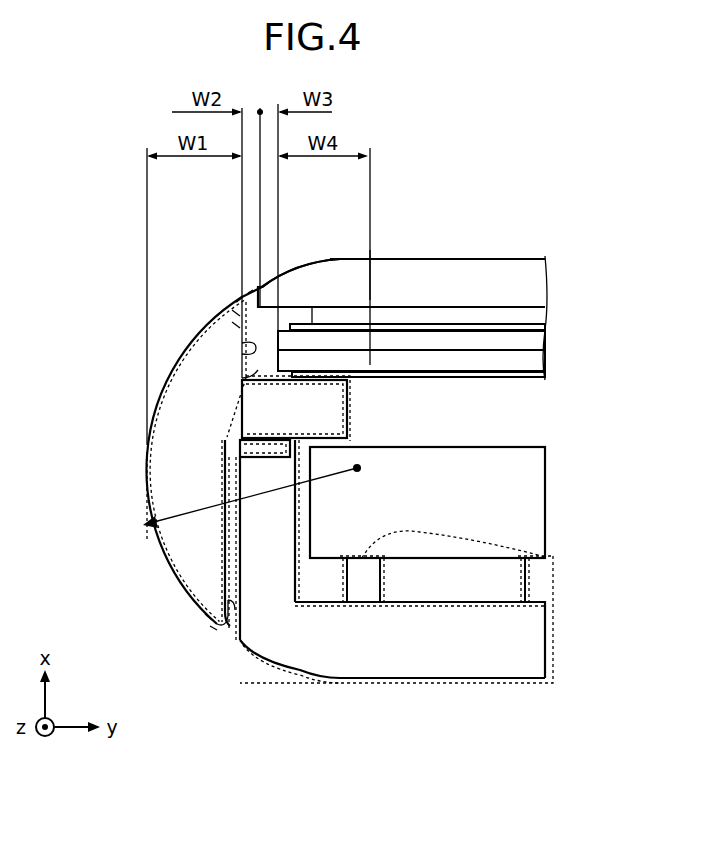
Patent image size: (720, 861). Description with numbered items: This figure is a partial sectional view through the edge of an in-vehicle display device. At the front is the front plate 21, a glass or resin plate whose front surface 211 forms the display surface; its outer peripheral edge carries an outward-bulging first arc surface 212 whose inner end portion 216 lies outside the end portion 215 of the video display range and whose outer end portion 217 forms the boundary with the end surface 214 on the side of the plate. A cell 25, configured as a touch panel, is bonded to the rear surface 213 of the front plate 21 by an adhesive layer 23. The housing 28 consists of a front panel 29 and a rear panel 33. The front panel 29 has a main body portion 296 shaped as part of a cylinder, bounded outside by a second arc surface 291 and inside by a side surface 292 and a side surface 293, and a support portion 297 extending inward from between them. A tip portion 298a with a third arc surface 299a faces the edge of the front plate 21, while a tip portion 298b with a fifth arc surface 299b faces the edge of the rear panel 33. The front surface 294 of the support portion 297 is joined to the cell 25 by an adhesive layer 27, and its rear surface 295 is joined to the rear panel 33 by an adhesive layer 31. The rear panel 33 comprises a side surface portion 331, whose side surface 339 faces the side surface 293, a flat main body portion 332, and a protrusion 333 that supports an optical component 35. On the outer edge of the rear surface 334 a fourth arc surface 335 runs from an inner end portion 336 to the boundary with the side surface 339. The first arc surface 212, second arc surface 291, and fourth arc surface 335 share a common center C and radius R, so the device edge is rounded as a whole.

The front plate 21 is at (520, 285).
The front surface 211 is at (493, 257).
The first arc surface 212 is at (312, 264).
The rear surface 213 is at (248, 343).
The end surface 214 is at (235, 303).
The end portion 215 is at (373, 259).
The inner end portion 216 is at (350, 258).
The outer end portion 217 is at (242, 297).
The adhesive layer 23 is at (520, 318).
The cell 25 is at (520, 358).
The adhesive layer 27 is at (348, 382).
The housing 28 is at (196, 642).
The front panel 29 is at (165, 478).
The second arc surface 291 is at (157, 402).
The side surface 292 is at (240, 346).
The side surface 293 is at (232, 600).
The front surface 294 is at (238, 370).
The rear surface 295 is at (298, 440).
The main body portion 296 is at (157, 543).
The support portion 297 is at (350, 408).
The tip portion 298a is at (238, 323).
The tip portion 298b is at (212, 612).
The third arc surface 299a is at (238, 312).
The fifth arc surface 299b is at (216, 630).
The adhesive layer 31 is at (247, 445).
The rear panel 33 is at (528, 638).
The side surface portion 331 is at (248, 655).
The main body portion 332 is at (390, 685).
The protrusion 333 is at (543, 557).
The rear surface 334 is at (457, 680).
The fourth arc surface 335 is at (248, 660).
The inner end portion 336 is at (357, 680).
The side surface 339 is at (238, 568).
The optical component 35 is at (517, 525).
The center of the arc C is at (357, 468).
The radius of the arc R is at (231, 498).